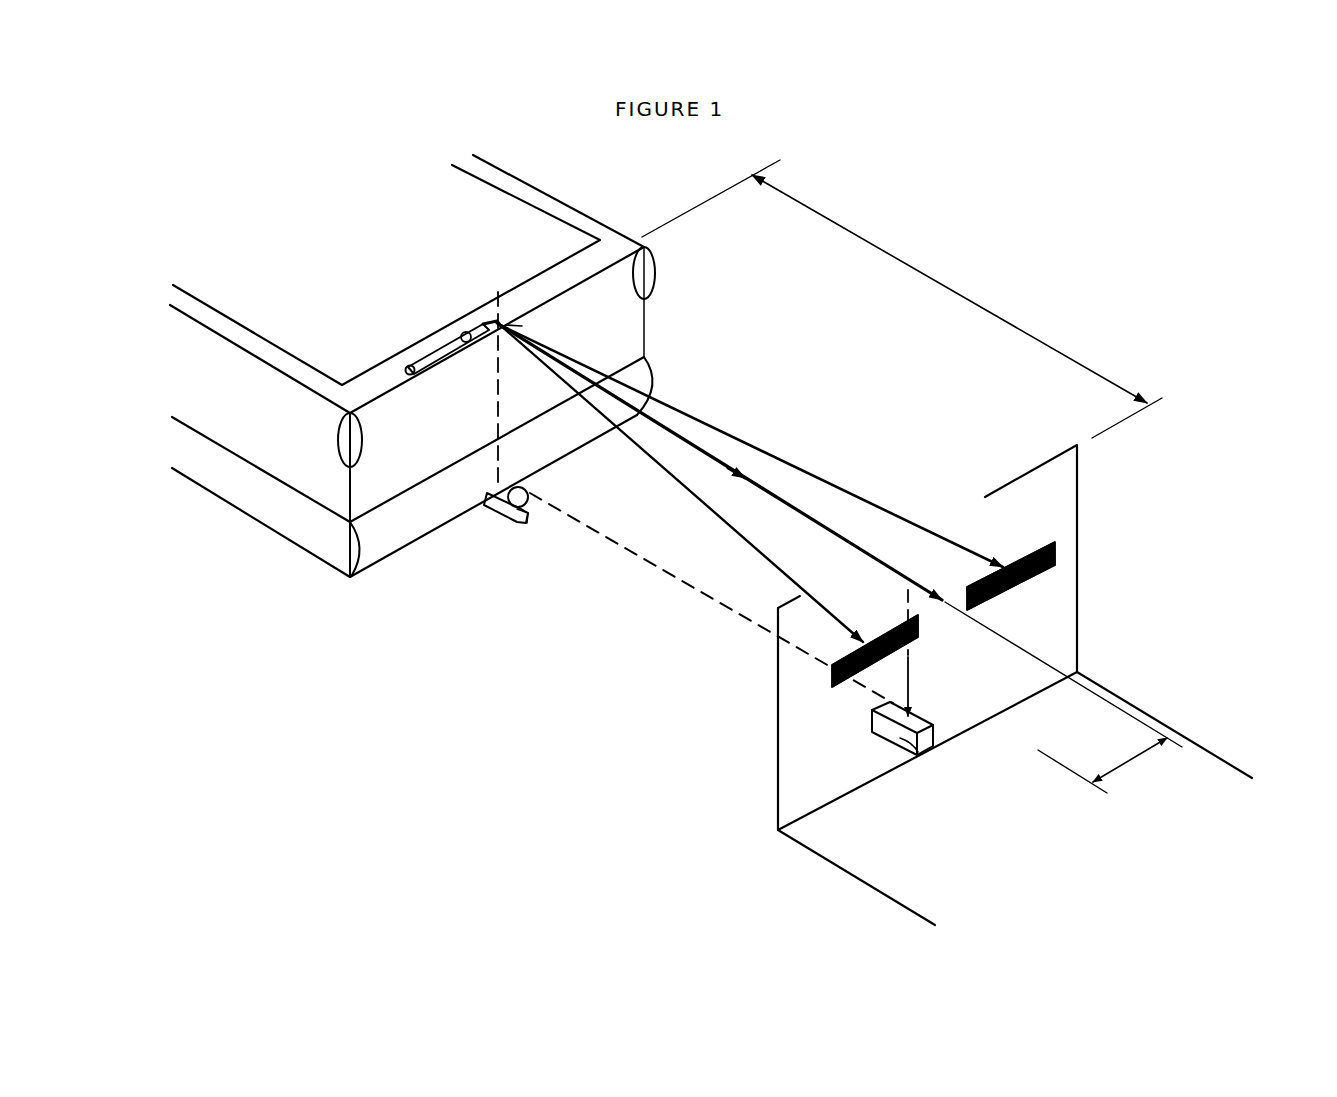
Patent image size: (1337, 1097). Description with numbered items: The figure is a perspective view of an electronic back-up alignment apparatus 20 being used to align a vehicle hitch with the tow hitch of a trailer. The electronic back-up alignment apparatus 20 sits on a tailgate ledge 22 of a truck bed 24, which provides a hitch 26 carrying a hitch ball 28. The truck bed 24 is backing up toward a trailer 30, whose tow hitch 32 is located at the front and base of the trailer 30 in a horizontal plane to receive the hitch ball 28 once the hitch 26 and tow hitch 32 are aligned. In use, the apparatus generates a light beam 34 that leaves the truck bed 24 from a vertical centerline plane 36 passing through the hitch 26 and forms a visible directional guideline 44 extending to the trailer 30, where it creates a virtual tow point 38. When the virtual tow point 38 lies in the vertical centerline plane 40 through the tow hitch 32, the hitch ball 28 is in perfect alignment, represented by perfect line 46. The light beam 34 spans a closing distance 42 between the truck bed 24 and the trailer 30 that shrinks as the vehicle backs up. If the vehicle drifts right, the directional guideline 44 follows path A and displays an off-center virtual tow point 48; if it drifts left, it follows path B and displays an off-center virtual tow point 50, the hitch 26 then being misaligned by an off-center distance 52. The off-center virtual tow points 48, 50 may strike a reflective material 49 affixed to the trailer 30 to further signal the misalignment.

The electronic back-up alignment apparatus 20 is at (446, 335).
The tailgate ledge 22 is at (557, 203).
The truck bed 24 is at (273, 500).
The hitch 26 is at (490, 505).
The hitch ball 28 is at (508, 521).
The trailer 30 is at (1063, 490).
The tow hitch 32 is at (918, 752).
The light beam 34 is at (658, 428).
The vertical centerline plane 36 is at (497, 402).
The virtual tow point 38 is at (950, 603).
The vertical centerline plane 40 is at (870, 712).
The closing distance 42 is at (902, 299).
The directional guideline 44 is at (748, 478).
The perfect line 46 is at (658, 572).
The off-center virtual tow point 48 is at (832, 668).
The reflective material 49 is at (832, 683).
The off-center virtual tow point 50 is at (1008, 565).
The off-center distance 52 is at (1102, 765).
The path A is at (680, 488).
The path B is at (868, 497).